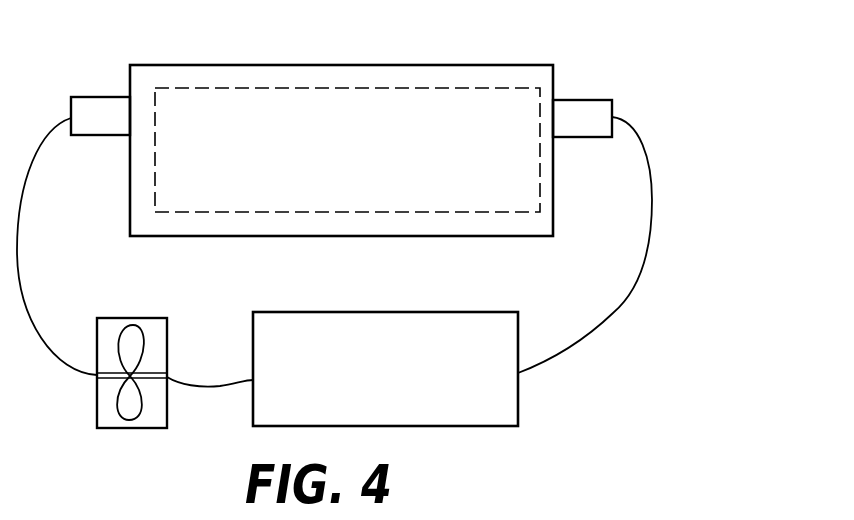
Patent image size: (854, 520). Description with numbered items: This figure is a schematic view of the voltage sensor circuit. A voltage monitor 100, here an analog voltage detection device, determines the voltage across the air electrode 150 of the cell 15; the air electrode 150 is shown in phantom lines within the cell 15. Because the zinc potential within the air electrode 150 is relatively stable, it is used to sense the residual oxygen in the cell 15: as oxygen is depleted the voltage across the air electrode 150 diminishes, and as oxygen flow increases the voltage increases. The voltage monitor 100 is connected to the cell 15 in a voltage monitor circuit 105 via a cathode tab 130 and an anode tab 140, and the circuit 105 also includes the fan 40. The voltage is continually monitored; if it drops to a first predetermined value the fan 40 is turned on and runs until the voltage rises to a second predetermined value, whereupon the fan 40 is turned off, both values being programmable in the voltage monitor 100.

The cell 15 is at (262, 65).
The air electrode 150 is at (432, 88).
The cathode tab 130 is at (100, 97).
The anode tab 140 is at (575, 100).
The voltage monitor circuit 105 is at (652, 225).
The fan 40 is at (97, 402).
The voltage monitor 100 is at (343, 312).